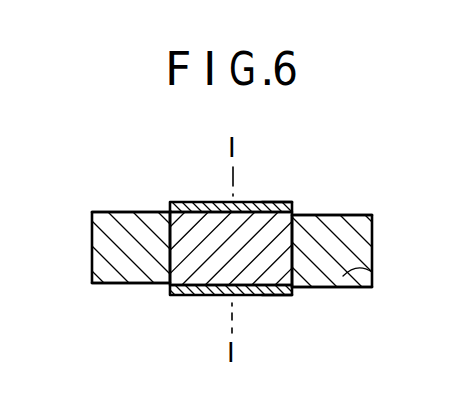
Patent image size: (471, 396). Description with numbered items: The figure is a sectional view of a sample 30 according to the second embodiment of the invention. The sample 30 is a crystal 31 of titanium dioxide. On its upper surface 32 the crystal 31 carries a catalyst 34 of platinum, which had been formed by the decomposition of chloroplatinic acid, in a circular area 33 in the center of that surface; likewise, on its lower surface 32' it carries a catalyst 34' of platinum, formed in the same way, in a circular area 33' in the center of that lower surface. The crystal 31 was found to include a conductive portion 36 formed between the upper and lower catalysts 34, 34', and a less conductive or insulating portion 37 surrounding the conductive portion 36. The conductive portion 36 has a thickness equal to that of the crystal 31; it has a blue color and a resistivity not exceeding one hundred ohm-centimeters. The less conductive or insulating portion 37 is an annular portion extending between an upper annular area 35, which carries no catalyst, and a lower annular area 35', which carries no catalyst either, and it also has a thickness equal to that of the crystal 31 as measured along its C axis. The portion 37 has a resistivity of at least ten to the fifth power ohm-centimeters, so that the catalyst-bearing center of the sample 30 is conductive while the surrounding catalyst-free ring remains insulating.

The sample 30 is at (92, 239).
The crystal 31 is at (372, 228).
The upper surface 32 is at (338, 195).
The lower surface 32' is at (337, 315).
The circular area 33 is at (300, 179).
The circular area 33' is at (293, 319).
The catalyst 34 is at (231, 184).
The catalyst 34' is at (231, 329).
The upper annular area 35 is at (131, 192).
The lower annular area 35' is at (131, 314).
The conductive portion 36 is at (205, 234).
The less conductive or insulating portion 37 is at (372, 272).